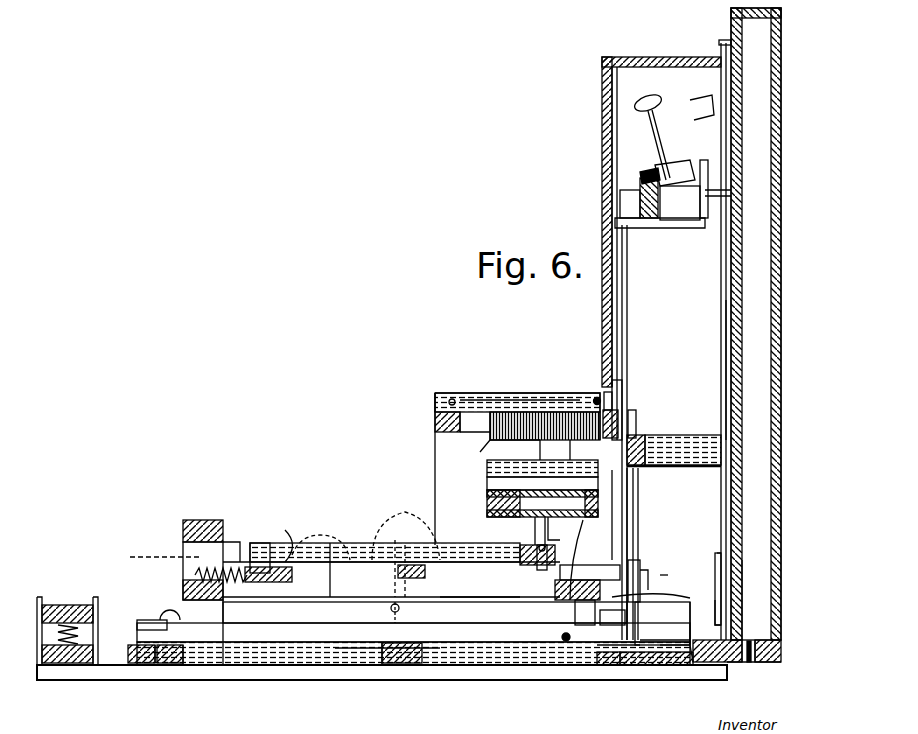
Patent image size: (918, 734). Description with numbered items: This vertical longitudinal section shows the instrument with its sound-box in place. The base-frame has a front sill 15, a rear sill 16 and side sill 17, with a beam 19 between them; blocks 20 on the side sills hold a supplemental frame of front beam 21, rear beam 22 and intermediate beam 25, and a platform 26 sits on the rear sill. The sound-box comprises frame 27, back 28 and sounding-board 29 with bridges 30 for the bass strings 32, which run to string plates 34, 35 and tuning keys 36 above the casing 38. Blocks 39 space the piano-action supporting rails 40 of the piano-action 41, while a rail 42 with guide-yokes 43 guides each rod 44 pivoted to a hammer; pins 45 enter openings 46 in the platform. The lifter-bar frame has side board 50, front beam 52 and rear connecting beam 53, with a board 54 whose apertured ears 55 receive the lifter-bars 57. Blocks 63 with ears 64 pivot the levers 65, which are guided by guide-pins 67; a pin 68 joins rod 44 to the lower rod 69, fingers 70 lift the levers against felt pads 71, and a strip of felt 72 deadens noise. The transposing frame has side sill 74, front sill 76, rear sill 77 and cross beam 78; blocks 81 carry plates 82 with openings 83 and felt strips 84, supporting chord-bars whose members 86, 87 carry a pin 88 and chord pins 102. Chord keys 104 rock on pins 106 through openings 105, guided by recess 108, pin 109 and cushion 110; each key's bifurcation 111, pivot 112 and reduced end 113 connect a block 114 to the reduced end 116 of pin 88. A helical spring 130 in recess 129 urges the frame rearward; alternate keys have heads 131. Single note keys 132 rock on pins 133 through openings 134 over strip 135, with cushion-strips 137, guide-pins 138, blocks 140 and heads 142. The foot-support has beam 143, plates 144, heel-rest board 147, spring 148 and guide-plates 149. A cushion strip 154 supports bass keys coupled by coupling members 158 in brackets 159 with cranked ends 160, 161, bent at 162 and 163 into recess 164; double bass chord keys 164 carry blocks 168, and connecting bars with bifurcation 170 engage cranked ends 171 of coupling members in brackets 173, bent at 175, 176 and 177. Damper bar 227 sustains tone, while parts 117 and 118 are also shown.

The front sill 15 is at (180, 666).
The rear sill 16 is at (600, 668).
The side connecting sill 17 is at (300, 665).
The beam 19 is at (388, 665).
The blocks 20 is at (480, 614).
The front beam 21 is at (195, 575).
The rear beam 22 is at (640, 565).
The intermediate beam 25 is at (334, 557).
The platform 26 is at (419, 660).
The frame 27 is at (654, 253).
The back 28 is at (782, 356).
The sounding-board 29 is at (742, 418).
The bridges 30 is at (726, 80).
The bass strings 32 is at (726, 346).
The string plate 34 is at (717, 553).
The string plate 35 is at (715, 605).
The tuning keys 36 is at (719, 42).
The casing 38 is at (602, 140).
The blocks 39 is at (700, 222).
The piano-action supporting rails 40 is at (648, 222).
The piano-action 41 is at (665, 172).
The rail 42 is at (645, 470).
The guide-yokes 43 is at (640, 436).
The rod 44 is at (622, 318).
The pins 45 is at (755, 662).
The openings 46 is at (745, 670).
The side board 50 is at (435, 458).
The front beam 52 is at (435, 418).
The rear connecting beam 53 is at (593, 400).
The board 54 is at (460, 435).
The apertured ears 55 is at (488, 410).
The lifter-bar 57 is at (548, 410).
The blocks 63 is at (435, 395).
The apertured ears 64 is at (458, 395).
The levers 65 is at (510, 395).
The guide-pins 67 is at (622, 385).
The pin 68 is at (634, 395).
The rod 69 is at (640, 506).
The finger 70 is at (503, 457).
The felt pads 71 is at (492, 438).
The strip of felt 72 is at (636, 402).
The side sill 74 is at (285, 560).
The front sill 76 is at (258, 548).
The rear sill 77 is at (588, 560).
The intermediate cross connecting beam 78 is at (405, 565).
The blocks 81 is at (487, 518).
The plates 82 is at (487, 496).
The openings 83 is at (564, 529).
The strips 84 is at (601, 498).
The member 86 is at (542, 486).
The member 87 is at (575, 450).
The pin 88 is at (535, 530).
The pins 102 is at (542, 475).
The chord keys 104 is at (355, 548).
The opening 105 is at (408, 534).
The pin 106 is at (406, 525).
The recess 108 is at (295, 540).
The pin 109 is at (278, 585).
The cushion 110 is at (272, 597).
The bifurcation 111 is at (520, 565).
The pivot 112 is at (555, 590).
The reduced end 113 is at (476, 594).
The block 114 is at (559, 551).
The reduced end 116 is at (538, 548).
The block 117 is at (190, 520).
The block 118 is at (188, 548).
The recess 129 is at (152, 555).
The helical spring 130 is at (235, 545).
The upstanding head 131 is at (290, 540).
The single note keys 132 is at (355, 652).
The pins 133 is at (393, 618).
The openings 134 is at (445, 668).
The strip 135 is at (378, 665).
The cushion-strip 137 is at (140, 665).
The guide-pins 138 is at (156, 665).
The block 140 is at (562, 637).
The head 142 is at (172, 620).
The beam 143 is at (60, 665).
The plates 144 is at (96, 668).
The heel-rest board 147 is at (66, 605).
The helical spring 148 is at (80, 634).
The guide-plates 149 is at (96, 605).
The cushion strip 154 is at (625, 680).
The coupling members 158 is at (675, 623).
The brackets 159 is at (693, 666).
The cranked end 160 is at (665, 632).
The cranked end 161 is at (636, 665).
The upwardly bent portion 162 is at (651, 586).
The forwardly bent portion 163 is at (675, 680).
The double bass chord keys 164 is at (590, 570).
The blocks 168 is at (612, 515).
The bifurcation 170 is at (573, 612).
The cranked ends 171 is at (675, 565).
The brackets 173 is at (695, 580).
The forwardly directed end 175 is at (662, 622).
The upward portion 176 is at (606, 614).
The bent end 177 is at (655, 573).
The bar 227 is at (740, 189).